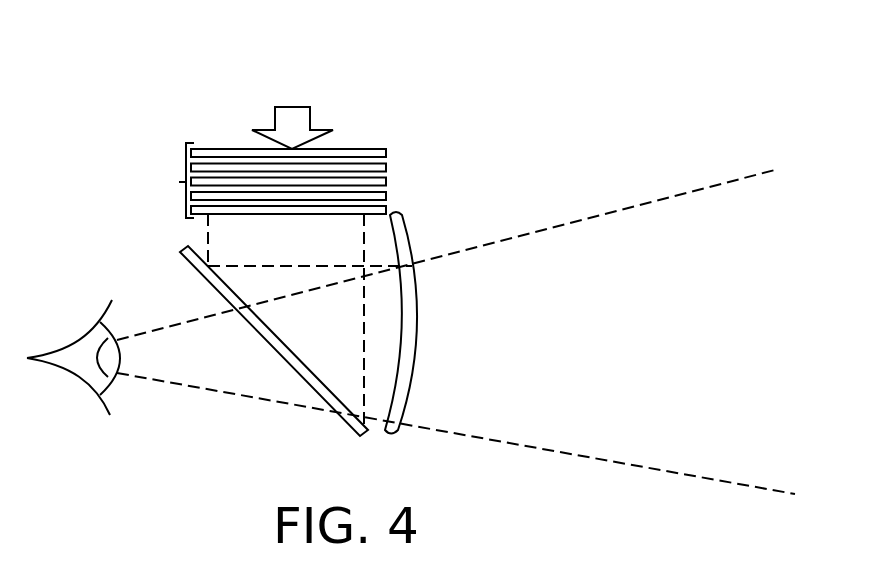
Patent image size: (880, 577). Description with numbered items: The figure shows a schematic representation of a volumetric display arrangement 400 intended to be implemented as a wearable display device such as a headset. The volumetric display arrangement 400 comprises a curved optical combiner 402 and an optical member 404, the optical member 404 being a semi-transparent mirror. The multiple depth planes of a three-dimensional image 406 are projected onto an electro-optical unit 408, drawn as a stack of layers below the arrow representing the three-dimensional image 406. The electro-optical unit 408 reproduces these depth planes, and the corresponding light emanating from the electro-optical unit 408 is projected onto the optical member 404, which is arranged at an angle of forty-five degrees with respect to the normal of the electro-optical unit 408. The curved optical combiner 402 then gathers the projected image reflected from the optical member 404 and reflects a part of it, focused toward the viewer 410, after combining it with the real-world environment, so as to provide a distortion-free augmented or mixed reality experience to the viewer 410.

The volumetric display arrangement 400 is at (456, 247).
The curved optical combiner 402 is at (456, 323).
The optical member 404 is at (274, 348).
The three-dimensional image 406 is at (292, 112).
The electro-optical unit 408 is at (249, 180).
The viewer 410 is at (73, 336).